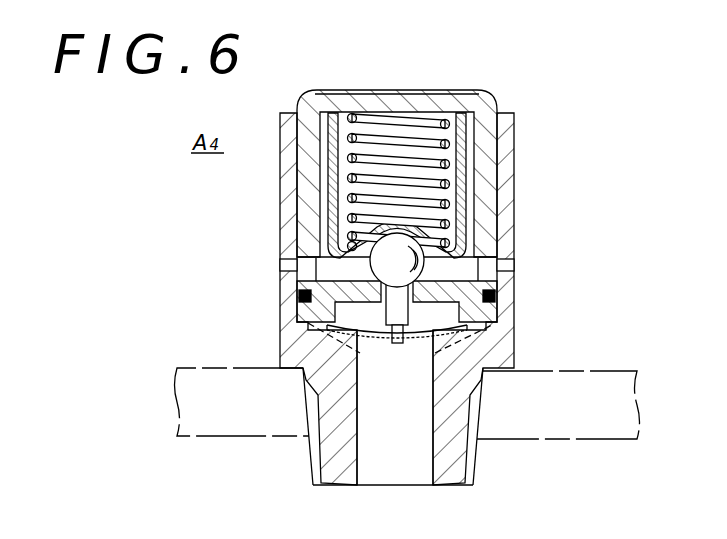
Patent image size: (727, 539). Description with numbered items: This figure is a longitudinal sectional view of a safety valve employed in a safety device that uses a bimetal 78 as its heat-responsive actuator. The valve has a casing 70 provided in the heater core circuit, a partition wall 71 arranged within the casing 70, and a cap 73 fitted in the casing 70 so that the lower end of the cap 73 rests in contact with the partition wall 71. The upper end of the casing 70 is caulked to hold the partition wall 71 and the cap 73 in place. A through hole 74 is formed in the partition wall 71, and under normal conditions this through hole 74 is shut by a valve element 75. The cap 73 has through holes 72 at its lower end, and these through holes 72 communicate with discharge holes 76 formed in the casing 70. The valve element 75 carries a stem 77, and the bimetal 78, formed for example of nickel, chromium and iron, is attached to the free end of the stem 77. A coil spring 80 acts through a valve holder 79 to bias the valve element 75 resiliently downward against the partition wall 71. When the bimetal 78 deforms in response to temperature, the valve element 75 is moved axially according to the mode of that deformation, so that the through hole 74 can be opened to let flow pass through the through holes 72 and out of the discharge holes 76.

The casing 70 is at (505, 343).
The partition wall 71 is at (493, 292).
The through holes 72 is at (497, 244).
The cap 73 is at (482, 193).
The through hole 74 is at (410, 289).
The valve element 75 is at (388, 259).
The discharge holes 76 is at (507, 267).
The stem 77 is at (385, 311).
The bimetal 78 is at (404, 342).
The valve holder 79 is at (465, 147).
The coil spring 80 is at (446, 116).